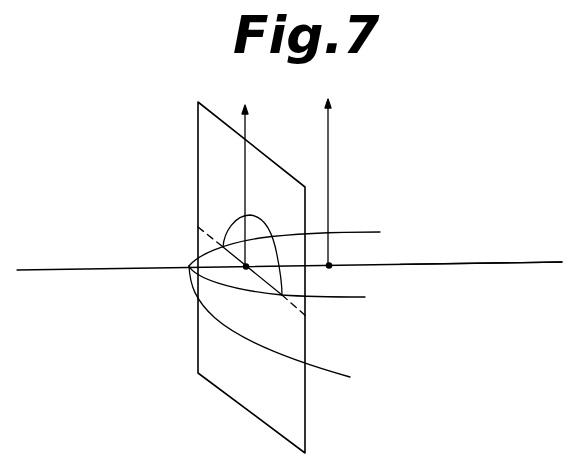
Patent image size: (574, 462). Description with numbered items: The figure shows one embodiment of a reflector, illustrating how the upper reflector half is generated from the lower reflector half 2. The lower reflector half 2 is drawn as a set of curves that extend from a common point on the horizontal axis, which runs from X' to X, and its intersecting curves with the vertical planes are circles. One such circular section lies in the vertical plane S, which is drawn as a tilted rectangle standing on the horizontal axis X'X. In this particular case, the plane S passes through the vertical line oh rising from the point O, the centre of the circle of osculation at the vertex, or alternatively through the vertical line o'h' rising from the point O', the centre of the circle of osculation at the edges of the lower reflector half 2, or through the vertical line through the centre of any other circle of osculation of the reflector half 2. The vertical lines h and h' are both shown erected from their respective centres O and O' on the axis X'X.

The plane of the circular sections S is at (236, 219).
The lower reflector half 2 is at (277, 353).
The vertical line oh h is at (252, 185).
The vertical line o' h' is at (337, 182).
The centre of the circle of osculation at the vertex O is at (246, 274).
The centre of the circle of osculation at the edges O' is at (330, 273).
The horizontal axis X is at (481, 252).
The horizontal axis X' is at (289, 259).